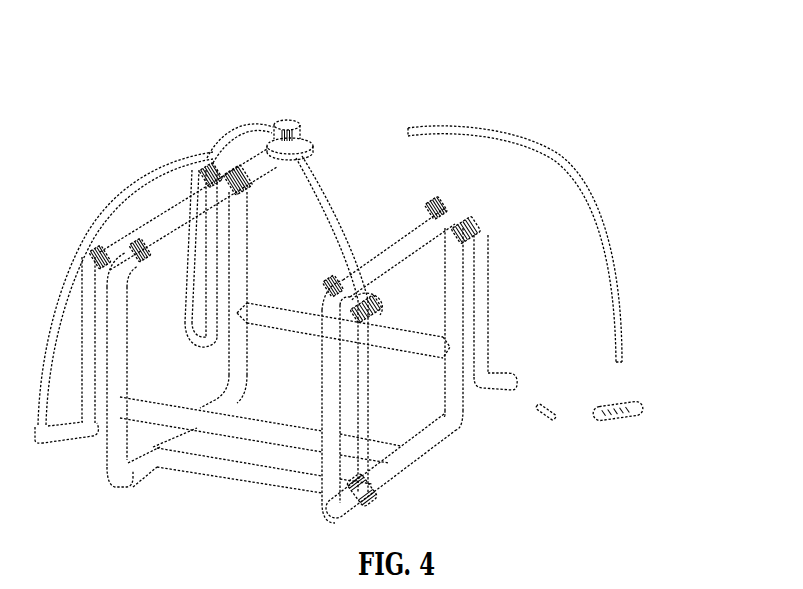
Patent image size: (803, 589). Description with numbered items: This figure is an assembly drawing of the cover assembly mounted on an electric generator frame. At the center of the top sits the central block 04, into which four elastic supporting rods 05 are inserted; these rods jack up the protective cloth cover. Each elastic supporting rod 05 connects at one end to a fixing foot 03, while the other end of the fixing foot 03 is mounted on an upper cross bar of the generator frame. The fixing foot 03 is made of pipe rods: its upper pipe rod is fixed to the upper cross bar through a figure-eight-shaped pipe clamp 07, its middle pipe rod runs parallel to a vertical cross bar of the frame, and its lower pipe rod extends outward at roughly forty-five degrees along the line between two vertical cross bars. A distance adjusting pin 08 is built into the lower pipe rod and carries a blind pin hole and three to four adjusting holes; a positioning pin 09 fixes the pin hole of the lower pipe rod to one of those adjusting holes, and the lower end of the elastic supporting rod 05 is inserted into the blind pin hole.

The fixing foot 03 is at (485, 315).
The central block 04 is at (310, 140).
The elastic supporting rod 05 is at (560, 157).
The 8-shaped pipe clamp 07 is at (453, 205).
The distance adjusting pin 08 is at (633, 414).
The positioning pin 09 is at (540, 414).